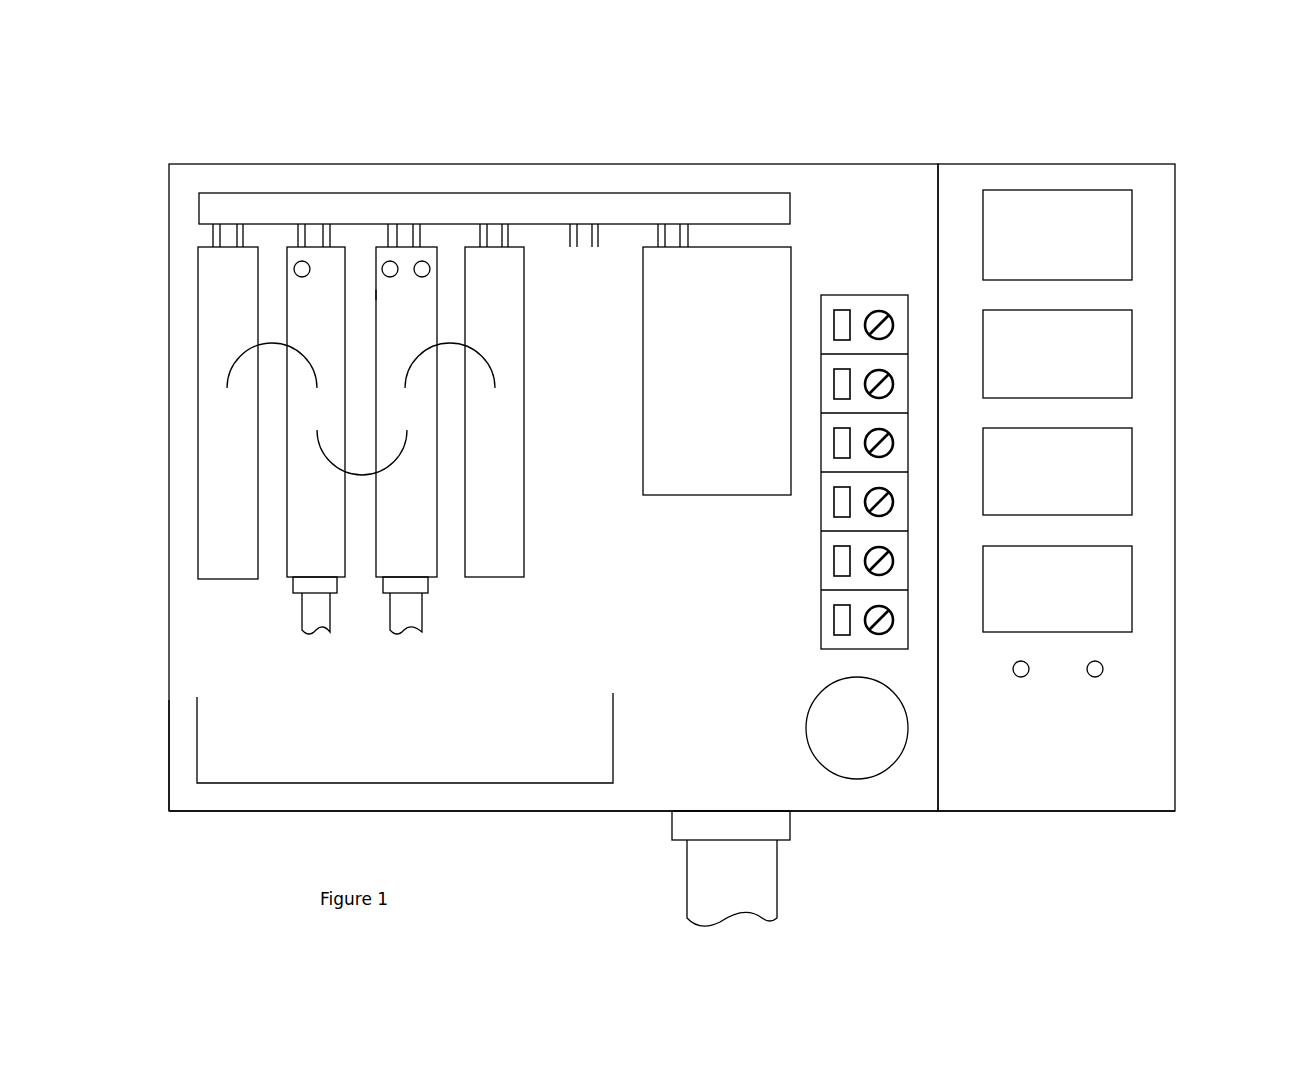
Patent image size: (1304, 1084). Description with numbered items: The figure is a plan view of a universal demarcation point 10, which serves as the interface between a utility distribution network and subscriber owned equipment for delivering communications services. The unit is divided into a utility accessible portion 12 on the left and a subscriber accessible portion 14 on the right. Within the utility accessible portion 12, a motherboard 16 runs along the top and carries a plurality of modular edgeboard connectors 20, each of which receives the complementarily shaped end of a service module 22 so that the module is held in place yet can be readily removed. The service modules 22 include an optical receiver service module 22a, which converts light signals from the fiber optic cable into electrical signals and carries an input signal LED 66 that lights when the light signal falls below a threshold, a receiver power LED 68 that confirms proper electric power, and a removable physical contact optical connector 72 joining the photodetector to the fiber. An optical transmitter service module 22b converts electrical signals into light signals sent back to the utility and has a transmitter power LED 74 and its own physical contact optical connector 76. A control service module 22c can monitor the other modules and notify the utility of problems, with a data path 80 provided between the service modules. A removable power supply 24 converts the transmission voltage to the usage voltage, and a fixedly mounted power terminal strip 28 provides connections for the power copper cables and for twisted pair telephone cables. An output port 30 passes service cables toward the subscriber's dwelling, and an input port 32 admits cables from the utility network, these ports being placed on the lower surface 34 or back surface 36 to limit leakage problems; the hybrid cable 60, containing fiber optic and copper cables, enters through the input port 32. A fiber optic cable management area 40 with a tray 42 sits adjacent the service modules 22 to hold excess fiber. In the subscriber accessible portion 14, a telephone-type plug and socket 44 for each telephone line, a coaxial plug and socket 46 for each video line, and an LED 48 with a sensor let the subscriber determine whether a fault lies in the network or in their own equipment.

The universal demarcation point 10 is at (139, 358).
The utility accessible portion 12 is at (556, 133).
The subscriber accessible portion 14 is at (1103, 132).
The motherboard 16 is at (792, 207).
The modular edgeboard connectors 20 is at (573, 247).
The service modules 22 is at (184, 285).
The optical receiver service module 22a is at (438, 248).
The optical transmitter service module 22b is at (287, 248).
The control service module 22c is at (527, 459).
The power supply 24 is at (718, 497).
The power terminal strip 28 is at (820, 562).
The output port 30 is at (853, 778).
The input port 32 is at (733, 810).
The lower surface 34 is at (375, 297).
The back surface 36 is at (696, 687).
The fiber optic cable management area 40 is at (198, 652).
The tray 42 is at (195, 727).
The RJ-11 plug and socket 44 is at (1132, 236).
The coaxial plug and socket 46 is at (1132, 473).
The LED 48 is at (1024, 677).
The hybrid cable 60 is at (685, 887).
The input signal LED 66 is at (389, 261).
The receiver power LED 68 is at (422, 261).
The physical contact optical connector 72 is at (423, 615).
The transmitter power LED 74 is at (302, 261).
The physical contact optical connector 76 is at (300, 615).
The data path 80 is at (483, 354).